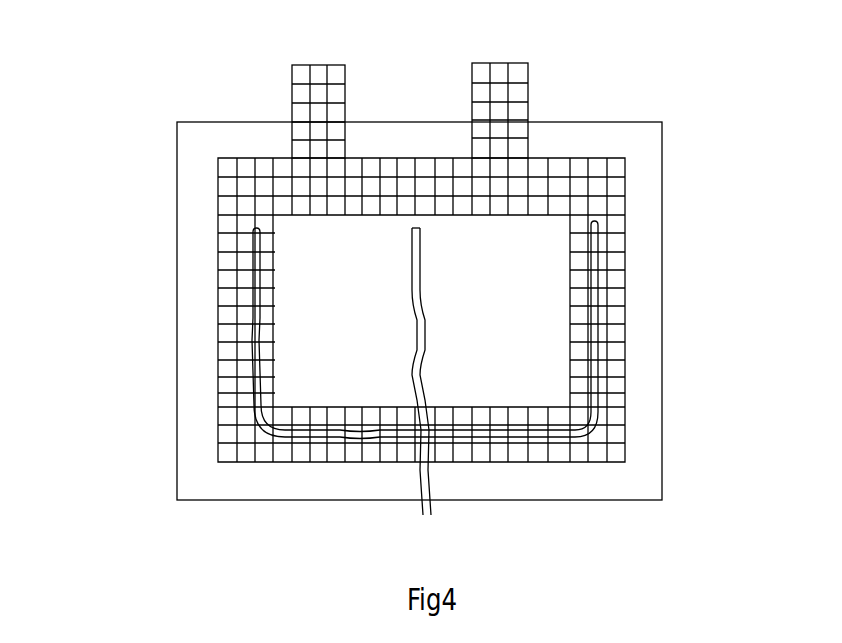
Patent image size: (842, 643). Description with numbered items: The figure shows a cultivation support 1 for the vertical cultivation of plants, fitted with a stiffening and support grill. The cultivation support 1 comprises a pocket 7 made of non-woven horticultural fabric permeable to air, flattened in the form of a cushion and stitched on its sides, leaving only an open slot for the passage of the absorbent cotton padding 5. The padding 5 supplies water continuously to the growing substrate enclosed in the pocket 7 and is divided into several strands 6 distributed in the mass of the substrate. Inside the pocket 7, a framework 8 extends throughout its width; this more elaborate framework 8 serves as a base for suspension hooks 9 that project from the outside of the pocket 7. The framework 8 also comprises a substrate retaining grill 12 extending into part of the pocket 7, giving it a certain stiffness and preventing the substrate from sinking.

The cultivation support 1 is at (157, 330).
The absorbent cotton padding 5 is at (430, 512).
The strands 6 is at (593, 243).
The pocket 7 is at (177, 182).
The framework 8 is at (615, 165).
The suspension hooks 9 is at (532, 72).
The substrate retaining grill 12 is at (618, 453).